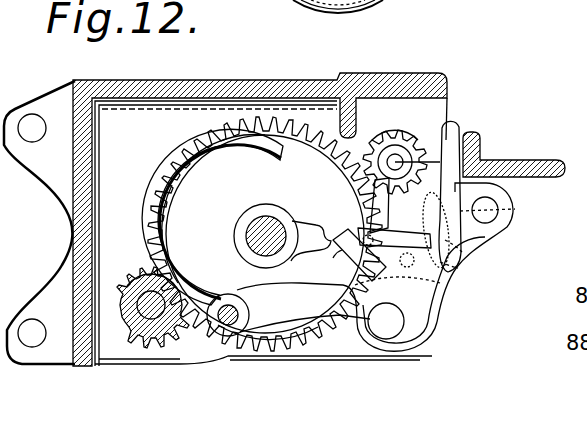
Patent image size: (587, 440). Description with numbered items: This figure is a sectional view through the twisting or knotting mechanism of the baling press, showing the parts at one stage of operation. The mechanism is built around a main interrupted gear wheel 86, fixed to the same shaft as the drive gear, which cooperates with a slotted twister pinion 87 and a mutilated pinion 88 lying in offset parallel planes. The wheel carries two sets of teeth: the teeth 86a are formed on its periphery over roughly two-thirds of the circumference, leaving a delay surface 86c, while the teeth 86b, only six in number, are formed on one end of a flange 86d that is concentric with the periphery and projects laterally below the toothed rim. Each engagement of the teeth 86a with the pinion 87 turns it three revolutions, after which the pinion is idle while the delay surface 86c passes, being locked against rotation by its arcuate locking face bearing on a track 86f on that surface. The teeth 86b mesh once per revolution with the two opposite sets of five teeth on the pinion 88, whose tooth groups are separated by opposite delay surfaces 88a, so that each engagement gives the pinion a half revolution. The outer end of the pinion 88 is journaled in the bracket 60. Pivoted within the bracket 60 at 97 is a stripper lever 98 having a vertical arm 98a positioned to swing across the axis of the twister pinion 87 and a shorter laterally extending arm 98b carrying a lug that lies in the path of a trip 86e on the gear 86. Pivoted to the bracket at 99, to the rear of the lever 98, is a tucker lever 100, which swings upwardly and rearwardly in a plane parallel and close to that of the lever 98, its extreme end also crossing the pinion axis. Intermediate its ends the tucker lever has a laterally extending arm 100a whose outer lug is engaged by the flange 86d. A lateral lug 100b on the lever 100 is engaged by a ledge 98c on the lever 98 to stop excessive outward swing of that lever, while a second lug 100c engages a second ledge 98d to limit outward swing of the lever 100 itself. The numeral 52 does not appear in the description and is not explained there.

The bracket 60 is at (220, 83).
The bracket 52 is at (512, 158).
The main interrupted gear wheel 86 is at (233, 187).
The gear teeth 86a is at (215, 153).
The gear teeth 86b is at (313, 340).
The delay surface 86c is at (345, 156).
The flange 86d is at (205, 218).
The trip 86e is at (310, 240).
The track 86f is at (415, 127).
The slotted twister pinion 87 is at (420, 150).
The mutilated pinion 88 is at (147, 342).
The delay surfaces 88a is at (150, 263).
The pivot 97 is at (392, 322).
The stripper lever 98 is at (440, 297).
The vertical arm 98a is at (460, 128).
The laterally extending arm 98b is at (340, 258).
The ledge 98c is at (512, 204).
The second ledge 98d is at (432, 305).
The pivot 99 is at (243, 333).
The tucker lever 100 is at (410, 361).
The laterally extending arm 100a is at (495, 232).
The lateral lug 100b is at (427, 250).
The second lug 100c is at (400, 270).